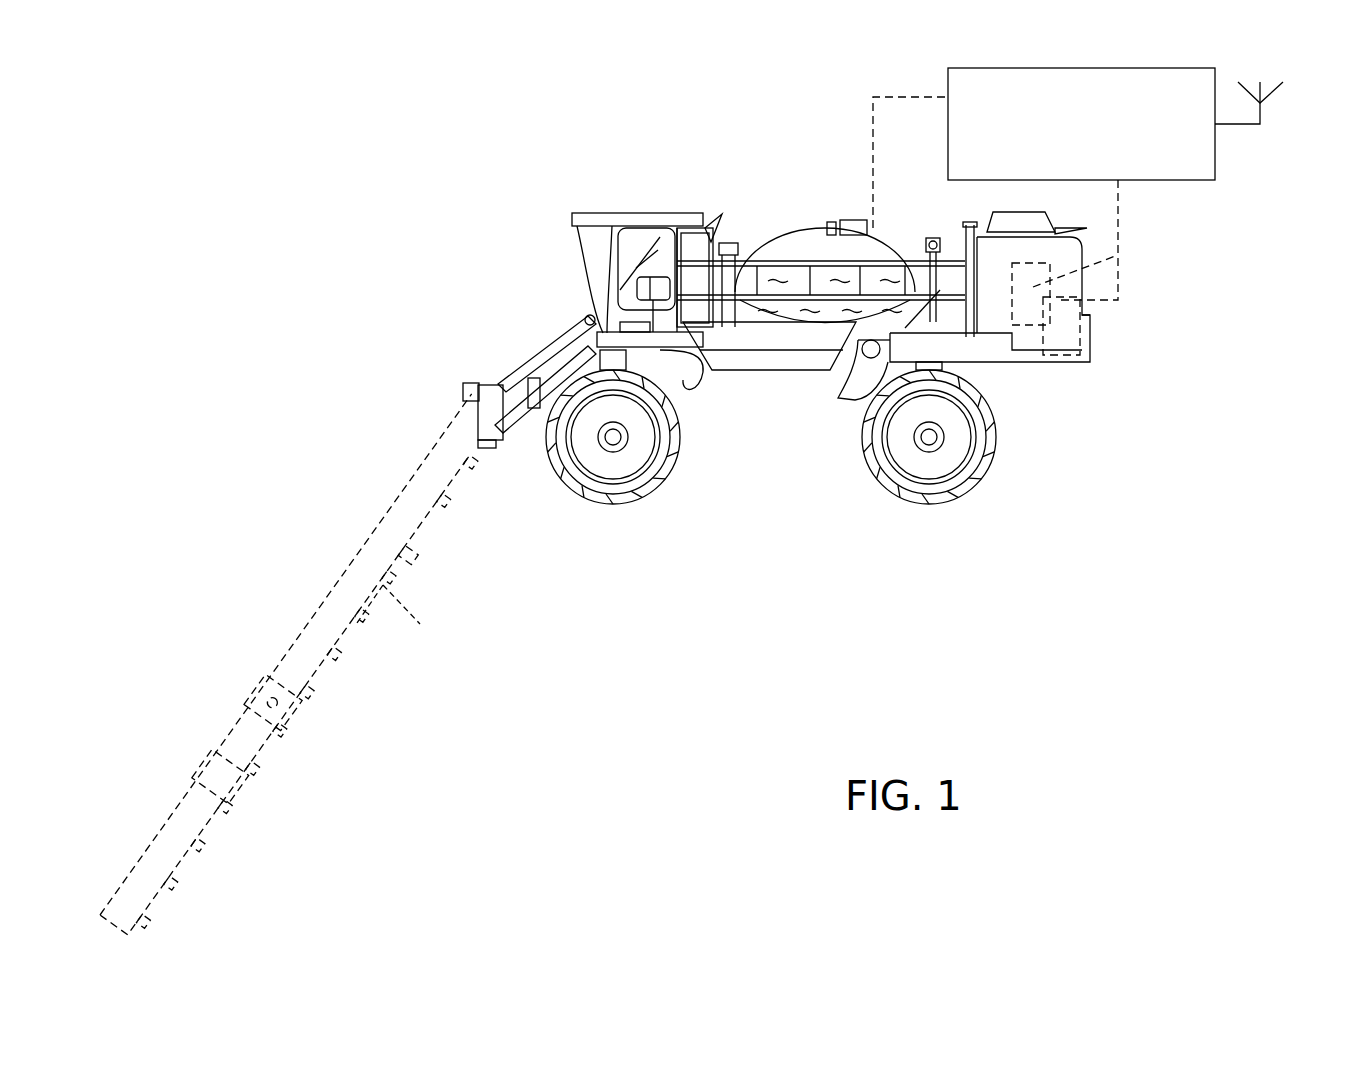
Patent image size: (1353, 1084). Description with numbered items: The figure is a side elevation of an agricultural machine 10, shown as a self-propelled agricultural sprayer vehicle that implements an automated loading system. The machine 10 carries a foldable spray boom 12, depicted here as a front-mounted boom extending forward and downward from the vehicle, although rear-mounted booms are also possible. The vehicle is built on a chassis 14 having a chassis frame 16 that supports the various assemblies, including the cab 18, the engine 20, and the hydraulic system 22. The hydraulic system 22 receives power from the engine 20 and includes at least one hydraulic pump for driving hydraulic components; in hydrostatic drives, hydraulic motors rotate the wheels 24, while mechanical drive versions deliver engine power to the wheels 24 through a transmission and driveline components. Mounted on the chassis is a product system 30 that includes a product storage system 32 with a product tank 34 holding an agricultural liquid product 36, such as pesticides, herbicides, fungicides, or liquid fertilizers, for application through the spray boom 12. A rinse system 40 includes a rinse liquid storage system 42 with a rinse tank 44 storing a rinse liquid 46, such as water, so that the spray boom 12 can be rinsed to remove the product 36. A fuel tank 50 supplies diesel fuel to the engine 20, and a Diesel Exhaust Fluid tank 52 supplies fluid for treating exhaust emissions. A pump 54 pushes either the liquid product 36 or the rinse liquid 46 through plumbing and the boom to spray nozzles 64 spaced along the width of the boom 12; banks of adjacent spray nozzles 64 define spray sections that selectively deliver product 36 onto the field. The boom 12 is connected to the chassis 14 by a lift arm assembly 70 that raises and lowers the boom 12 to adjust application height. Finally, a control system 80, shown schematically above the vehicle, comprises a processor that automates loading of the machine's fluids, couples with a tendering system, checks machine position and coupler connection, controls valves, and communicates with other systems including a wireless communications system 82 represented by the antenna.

The agricultural machine 10 is at (838, 110).
The foldable spray boom 12 is at (345, 588).
The chassis 14 is at (790, 380).
The chassis frame 16 is at (857, 373).
The cab 18 is at (648, 208).
The engine 20 is at (1086, 272).
The hydraulic system 22 is at (1002, 311).
The wheels 24 is at (641, 497).
The product system 30 is at (788, 126).
The product storage system 32 is at (887, 226).
The product tank 34 is at (798, 228).
The agricultural liquid product 36 is at (770, 290).
The rinse system 40 is at (915, 179).
The rinse liquid storage system 42 is at (937, 234).
The rinse tank 44 is at (933, 238).
The rinse liquid 46 is at (842, 224).
The fuel tank 50 is at (1073, 364).
The Diesel Exhaust Fluid tank 52 is at (1030, 364).
The pump 54 is at (882, 357).
The spray nozzles 64 is at (355, 622).
The lift arm assembly 70 is at (560, 322).
The control system 80 is at (1152, 180).
The wireless communications system 82 is at (1272, 130).